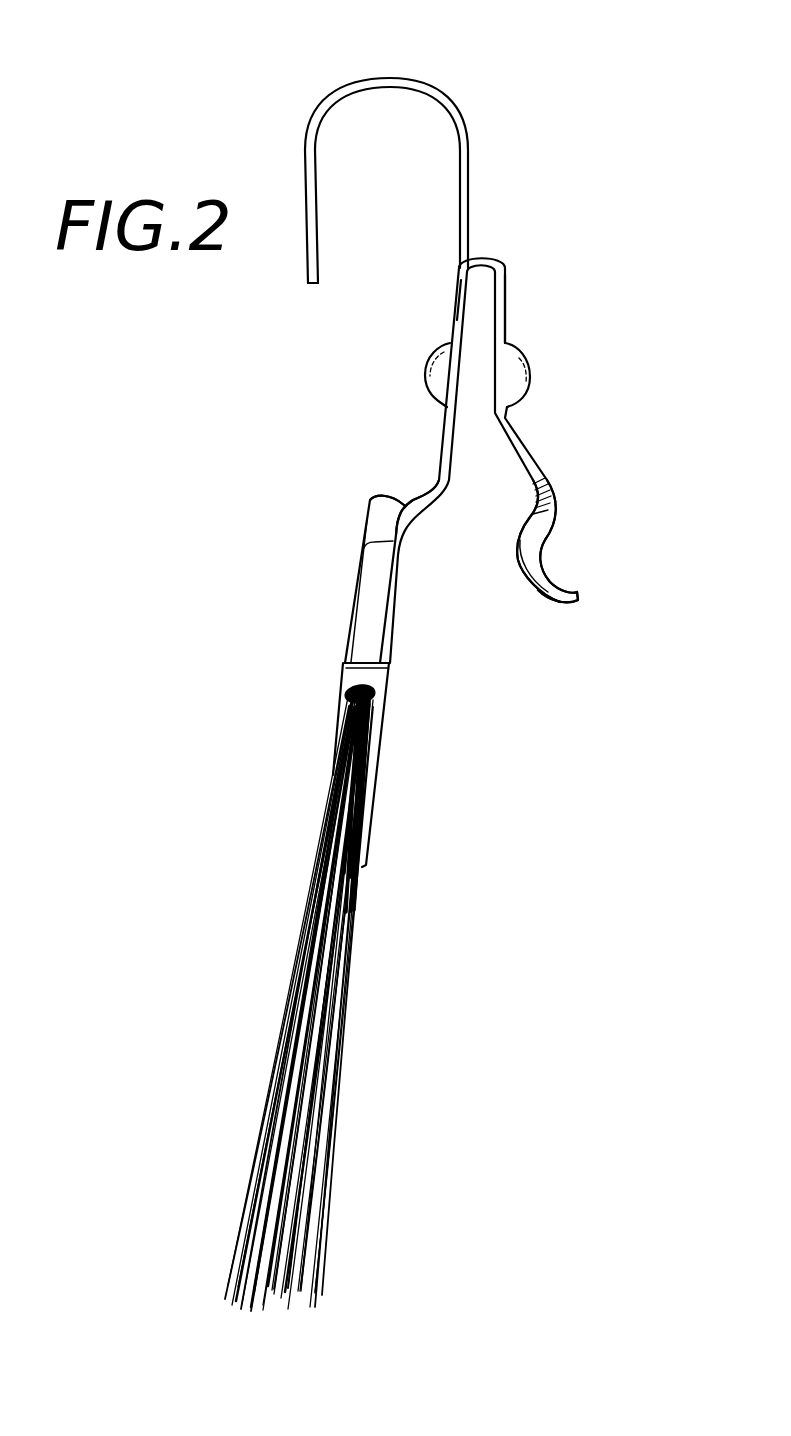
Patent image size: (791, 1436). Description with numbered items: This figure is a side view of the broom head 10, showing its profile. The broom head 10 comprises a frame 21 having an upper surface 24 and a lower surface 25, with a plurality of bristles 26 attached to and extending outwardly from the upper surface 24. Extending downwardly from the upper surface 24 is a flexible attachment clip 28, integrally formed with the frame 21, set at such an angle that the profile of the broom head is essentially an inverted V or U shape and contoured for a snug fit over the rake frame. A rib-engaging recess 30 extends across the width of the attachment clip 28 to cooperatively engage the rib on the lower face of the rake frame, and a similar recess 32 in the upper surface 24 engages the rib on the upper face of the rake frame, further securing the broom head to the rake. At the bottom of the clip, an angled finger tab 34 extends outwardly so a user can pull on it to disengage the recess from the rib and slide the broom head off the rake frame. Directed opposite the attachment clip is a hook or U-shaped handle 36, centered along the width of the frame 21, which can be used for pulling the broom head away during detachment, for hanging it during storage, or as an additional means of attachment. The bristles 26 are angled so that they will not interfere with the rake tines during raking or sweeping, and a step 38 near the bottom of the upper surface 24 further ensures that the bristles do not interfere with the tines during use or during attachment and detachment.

The broom head 10 is at (405, 440).
The frame 21 is at (505, 243).
The upper surface 24 is at (457, 316).
The lower surface 25 is at (390, 630).
The bristles 26 is at (323, 1190).
The attachment clips 28 is at (505, 302).
The rib-engaging recess 30 is at (530, 386).
The recess 32 is at (423, 367).
The finger tab 34 is at (548, 537).
The handle 36 is at (427, 87).
The step 38 is at (428, 509).